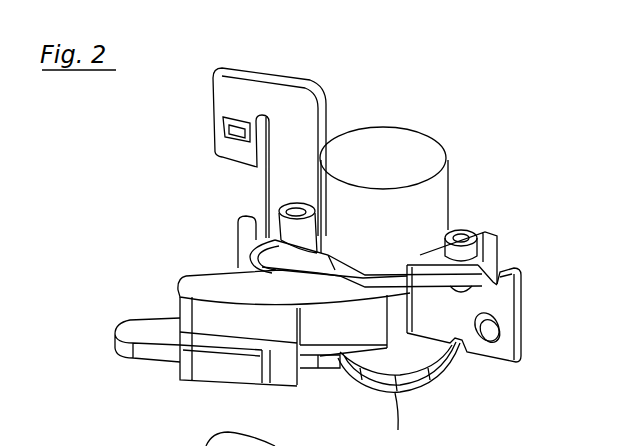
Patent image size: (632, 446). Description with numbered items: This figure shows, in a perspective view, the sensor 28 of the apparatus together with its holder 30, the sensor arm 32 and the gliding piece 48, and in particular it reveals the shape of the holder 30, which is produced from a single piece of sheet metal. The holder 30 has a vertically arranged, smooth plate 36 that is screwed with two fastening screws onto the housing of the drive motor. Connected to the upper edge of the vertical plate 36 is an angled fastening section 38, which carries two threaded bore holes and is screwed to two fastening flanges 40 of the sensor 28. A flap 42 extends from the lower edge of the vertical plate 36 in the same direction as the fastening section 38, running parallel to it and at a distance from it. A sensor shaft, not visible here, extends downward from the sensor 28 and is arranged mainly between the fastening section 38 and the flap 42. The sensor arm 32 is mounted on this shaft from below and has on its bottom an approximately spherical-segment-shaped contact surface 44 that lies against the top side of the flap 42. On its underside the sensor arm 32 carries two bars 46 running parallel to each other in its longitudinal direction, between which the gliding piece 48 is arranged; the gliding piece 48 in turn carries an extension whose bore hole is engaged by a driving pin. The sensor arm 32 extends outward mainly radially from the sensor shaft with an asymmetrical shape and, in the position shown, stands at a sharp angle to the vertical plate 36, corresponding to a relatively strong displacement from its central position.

The sensor 28 is at (417, 152).
The holder 30 is at (240, 98).
The sensor arm 32 is at (200, 282).
The vertical plate 36 is at (500, 305).
The angled fastening section 38 is at (496, 261).
The fastening flanges 40 is at (272, 230).
The flap 42 is at (420, 387).
The contact surface 44 is at (406, 419).
The bars 46 is at (223, 373).
The gliding piece 48 is at (140, 332).